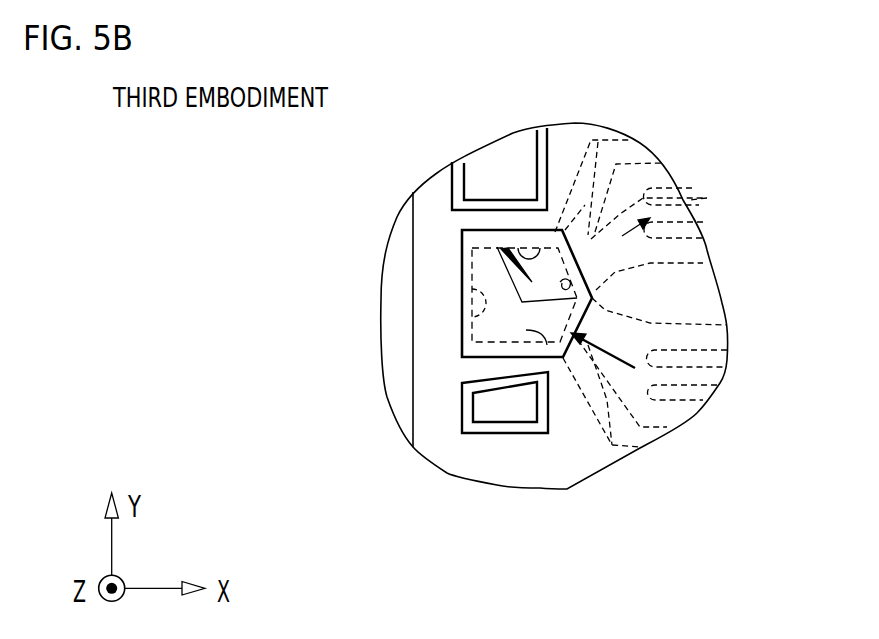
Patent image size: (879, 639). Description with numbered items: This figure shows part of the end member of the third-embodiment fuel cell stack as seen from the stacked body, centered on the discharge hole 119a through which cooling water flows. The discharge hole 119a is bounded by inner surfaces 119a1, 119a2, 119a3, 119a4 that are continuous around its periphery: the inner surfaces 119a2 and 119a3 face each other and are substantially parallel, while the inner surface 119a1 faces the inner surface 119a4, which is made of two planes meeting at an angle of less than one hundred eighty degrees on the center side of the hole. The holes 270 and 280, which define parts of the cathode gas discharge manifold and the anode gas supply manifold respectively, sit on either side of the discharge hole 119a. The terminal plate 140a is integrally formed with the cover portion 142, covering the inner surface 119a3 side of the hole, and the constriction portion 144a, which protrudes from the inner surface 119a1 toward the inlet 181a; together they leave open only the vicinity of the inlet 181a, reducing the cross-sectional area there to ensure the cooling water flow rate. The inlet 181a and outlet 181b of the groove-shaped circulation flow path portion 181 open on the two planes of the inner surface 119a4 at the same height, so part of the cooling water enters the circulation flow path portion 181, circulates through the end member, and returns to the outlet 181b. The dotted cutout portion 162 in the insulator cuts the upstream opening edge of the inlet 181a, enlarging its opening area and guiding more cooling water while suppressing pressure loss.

The terminal plate 140a is at (577, 143).
The hole 270 is at (487, 160).
The hole 280 is at (493, 402).
The discharge hole 119a is at (502, 250).
The inner surface 119a1 is at (471, 313).
The inner surface 119a2 is at (540, 265).
The inner surface 119a3 is at (562, 465).
The inner surface 119a4 is at (562, 283).
The constriction portion 144a is at (492, 280).
The cover portion 142 is at (543, 311).
The circulation flow path portion 181 is at (641, 291).
The inlet 181a is at (602, 128).
The outlet 181b is at (610, 440).
The cutout portion 162 is at (707, 198).